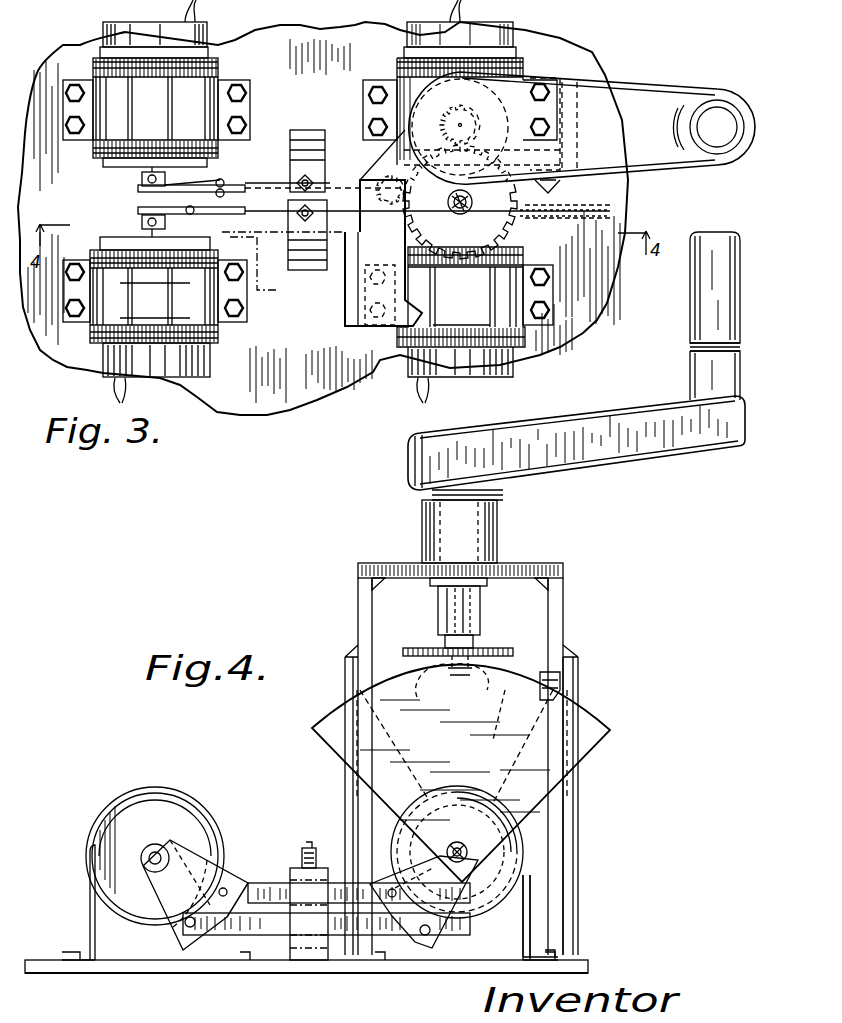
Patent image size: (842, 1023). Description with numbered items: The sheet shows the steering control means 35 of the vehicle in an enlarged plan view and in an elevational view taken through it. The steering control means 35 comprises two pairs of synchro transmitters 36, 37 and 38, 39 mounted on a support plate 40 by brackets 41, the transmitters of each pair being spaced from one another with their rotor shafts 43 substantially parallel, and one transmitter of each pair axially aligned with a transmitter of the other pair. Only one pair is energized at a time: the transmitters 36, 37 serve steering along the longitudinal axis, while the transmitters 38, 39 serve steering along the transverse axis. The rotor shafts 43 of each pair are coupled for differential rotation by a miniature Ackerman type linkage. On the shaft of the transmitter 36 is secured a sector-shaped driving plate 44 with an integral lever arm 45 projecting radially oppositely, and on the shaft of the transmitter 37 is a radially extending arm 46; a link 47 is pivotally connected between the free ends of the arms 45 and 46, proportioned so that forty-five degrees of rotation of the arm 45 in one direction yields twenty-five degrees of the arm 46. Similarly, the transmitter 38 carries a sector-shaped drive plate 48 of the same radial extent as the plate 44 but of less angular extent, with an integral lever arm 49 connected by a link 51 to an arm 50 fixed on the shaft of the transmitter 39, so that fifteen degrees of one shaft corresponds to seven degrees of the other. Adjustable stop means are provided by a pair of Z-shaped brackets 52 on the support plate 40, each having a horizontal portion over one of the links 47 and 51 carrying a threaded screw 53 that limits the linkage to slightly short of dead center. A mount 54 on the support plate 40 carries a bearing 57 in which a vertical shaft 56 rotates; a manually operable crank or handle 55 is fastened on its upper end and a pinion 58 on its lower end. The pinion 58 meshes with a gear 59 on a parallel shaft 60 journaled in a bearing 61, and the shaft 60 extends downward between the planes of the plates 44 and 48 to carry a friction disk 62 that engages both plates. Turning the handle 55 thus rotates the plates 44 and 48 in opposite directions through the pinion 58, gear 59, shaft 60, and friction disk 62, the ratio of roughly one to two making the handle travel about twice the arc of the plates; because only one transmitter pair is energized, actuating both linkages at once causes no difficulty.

In FIG. 3, the steering control means 35 is at (354, 400).
In FIG. 4, the steering control means 35 is at (618, 648).
In FIG. 3, the synchro transmitter 36 is at (508, 285).
In FIG. 3, the synchro transmitter 37 is at (207, 363).
In FIG. 3, the synchro transmitter 38 is at (490, 36).
In FIG. 4, the synchro transmitter 38 is at (510, 857).
In FIG. 3, the synchro transmitter 39 is at (218, 70).
In FIG. 4, the synchro transmitter 39 is at (180, 805).
In FIG. 3, the support plate 40 is at (296, 398).
In FIG. 4, the support plate 40 is at (282, 972).
In FIG. 3, the brackets 41 is at (90, 138).
In FIG. 4, the brackets 41 is at (88, 913).
In FIG. 3, the rotor shafts 43 is at (142, 180).
In FIG. 4, the rotor shafts 43 is at (147, 860).
In FIG. 3, the sector-shaped driving plate 44 is at (586, 215).
In FIG. 4, the sector-shaped driving plate 44 is at (582, 745).
In FIG. 4, the lever arm 45 is at (452, 928).
In FIG. 3, the radially extending arm 46 is at (245, 212).
In FIG. 4, the radially extending arm 46 is at (162, 898).
In FIG. 3, the link 47 is at (280, 232).
In FIG. 4, the link 47 is at (245, 930).
In FIG. 3, the sector-shaped drive plate 48 is at (555, 190).
In FIG. 4, the sector-shaped drive plate 48 is at (560, 680).
In FIG. 3, the lever arm 49 is at (573, 209).
In FIG. 4, the lever arm 49 is at (420, 867).
In FIG. 3, the radially extending arm 50 is at (193, 190).
In FIG. 4, the radially extending arm 50 is at (193, 860).
In FIG. 3, the link 51 is at (269, 185).
In FIG. 4, the link 51 is at (256, 885).
In FIG. 3, the Z-shaped brackets 52 is at (322, 178).
In FIG. 4, the Z-shaped brackets 52 is at (313, 948).
In FIG. 3, the screw 53 is at (304, 176).
In FIG. 4, the screw 53 is at (311, 848).
In FIG. 3, the mount 54 is at (373, 247).
In FIG. 4, the mount 54 is at (571, 817).
In FIG. 3, the crank or handle 55 is at (643, 103).
In FIG. 4, the crank or handle 55 is at (635, 446).
In FIG. 3, the vertical shaft 56 is at (575, 40).
In FIG. 4, the vertical shaft 56 is at (500, 518).
In FIG. 3, the bearing 57 is at (513, 126).
In FIG. 4, the bearing 57 is at (500, 548).
In FIG. 3, the pinion 58 is at (420, 112).
In FIG. 3, the gear 59 is at (515, 222).
In FIG. 4, the gear 59 is at (400, 652).
In FIG. 4, the shaft 60 is at (452, 688).
In FIG. 4, the bearing 61 is at (482, 584).
In FIG. 4, the friction disk or wheel 62 is at (489, 715).